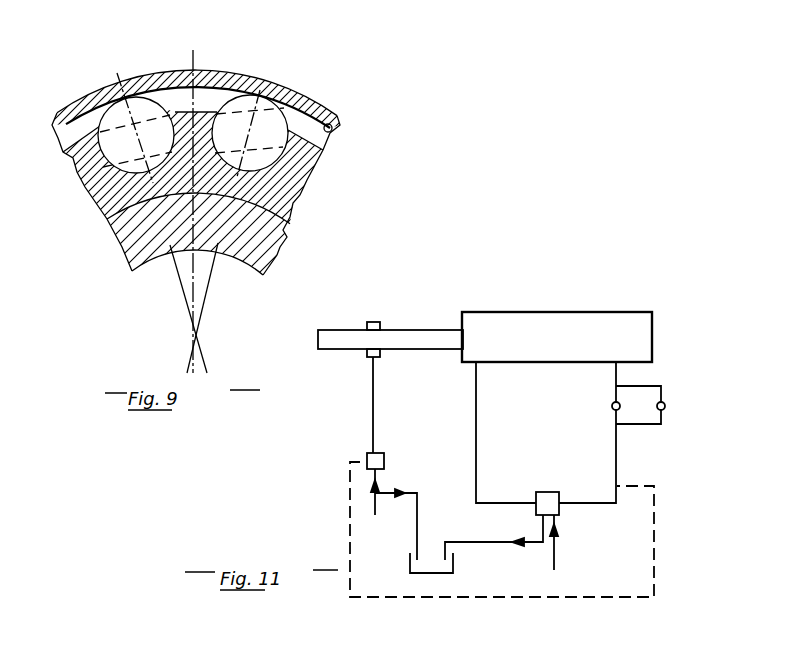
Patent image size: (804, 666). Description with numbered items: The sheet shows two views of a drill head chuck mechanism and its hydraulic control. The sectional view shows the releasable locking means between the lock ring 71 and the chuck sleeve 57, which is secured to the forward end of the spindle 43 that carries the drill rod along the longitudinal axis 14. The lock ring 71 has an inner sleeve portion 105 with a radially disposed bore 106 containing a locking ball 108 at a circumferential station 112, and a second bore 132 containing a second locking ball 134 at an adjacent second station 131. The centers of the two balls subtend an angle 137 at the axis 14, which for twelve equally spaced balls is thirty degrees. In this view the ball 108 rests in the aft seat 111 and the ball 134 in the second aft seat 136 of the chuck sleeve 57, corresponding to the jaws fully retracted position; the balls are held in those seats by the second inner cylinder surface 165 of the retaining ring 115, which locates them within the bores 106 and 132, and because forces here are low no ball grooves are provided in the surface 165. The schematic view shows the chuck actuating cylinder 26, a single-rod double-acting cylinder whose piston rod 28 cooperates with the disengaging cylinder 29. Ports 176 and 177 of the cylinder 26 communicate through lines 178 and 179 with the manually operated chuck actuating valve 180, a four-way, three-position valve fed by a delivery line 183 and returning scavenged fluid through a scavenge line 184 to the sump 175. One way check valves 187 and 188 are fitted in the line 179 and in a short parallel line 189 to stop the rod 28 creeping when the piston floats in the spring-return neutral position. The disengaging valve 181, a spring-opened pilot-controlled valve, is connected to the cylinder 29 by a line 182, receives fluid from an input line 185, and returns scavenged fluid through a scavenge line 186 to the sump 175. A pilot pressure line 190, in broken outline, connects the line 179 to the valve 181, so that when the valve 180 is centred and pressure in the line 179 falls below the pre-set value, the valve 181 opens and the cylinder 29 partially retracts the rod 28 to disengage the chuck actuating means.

In FIG. 9, the longitudinal axis 14 is at (207, 310).
In FIG. 11, the chuck actuating cylinder 26 is at (503, 325).
In FIG. 11, the piston rod 28 is at (425, 330).
In FIG. 11, the disengaging cylinder 29 is at (376, 321).
In FIG. 9, the spindle 43 is at (128, 235).
In FIG. 9, the chuck sleeve 57 is at (100, 207).
In FIG. 9, the lock ring 71 is at (62, 157).
In FIG. 9, the inner sleeve portion 105 is at (82, 169).
In FIG. 9, the radially disposed bore 106 is at (293, 165).
In FIG. 9, the locking ball 108 is at (270, 106).
In FIG. 9, the aft ball seat 111 is at (249, 133).
In FIG. 9, the circumferential station 112 is at (257, 72).
In FIG. 9, the retaining ring 115 is at (162, 82).
In FIG. 9, the second circumferential station 131 is at (135, 72).
In FIG. 9, the second bore 132 is at (97, 180).
In FIG. 9, the second locking ball 134 is at (122, 86).
In FIG. 9, the second aft seat 136 is at (136, 128).
In FIG. 9, the angle 137 is at (185, 310).
In FIG. 9, the second inner cylinder surface 165 is at (332, 130).
In FIG. 11, the sump 175 is at (430, 573).
In FIG. 11, the port 176 is at (478, 366).
In FIG. 11, the port 177 is at (616, 364).
In FIG. 11, the line 178 is at (476, 450).
In FIG. 11, the line 179 is at (616, 457).
In FIG. 11, the chuck actuating valve 180 is at (560, 510).
In FIG. 11, the disengaging valve 181 is at (384, 460).
In FIG. 11, the line 182 is at (373, 409).
In FIG. 11, the delivery line 183 is at (556, 545).
In FIG. 11, the scavenge line 184 is at (543, 530).
In FIG. 11, the input line 185 is at (373, 505).
In FIG. 11, the scavenge line 186 is at (417, 500).
In FIG. 11, the one way check valve 187 is at (612, 406).
In FIG. 11, the one way check valve 188 is at (661, 410).
In FIG. 11, the short parallel line 189 is at (672, 378).
In FIG. 11, the pilot pressure line 190 is at (654, 520).